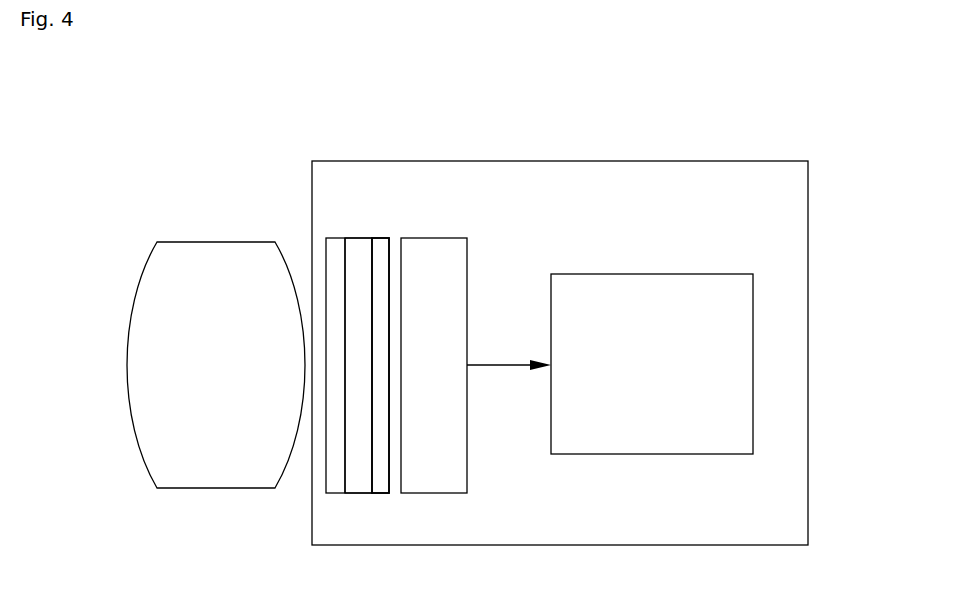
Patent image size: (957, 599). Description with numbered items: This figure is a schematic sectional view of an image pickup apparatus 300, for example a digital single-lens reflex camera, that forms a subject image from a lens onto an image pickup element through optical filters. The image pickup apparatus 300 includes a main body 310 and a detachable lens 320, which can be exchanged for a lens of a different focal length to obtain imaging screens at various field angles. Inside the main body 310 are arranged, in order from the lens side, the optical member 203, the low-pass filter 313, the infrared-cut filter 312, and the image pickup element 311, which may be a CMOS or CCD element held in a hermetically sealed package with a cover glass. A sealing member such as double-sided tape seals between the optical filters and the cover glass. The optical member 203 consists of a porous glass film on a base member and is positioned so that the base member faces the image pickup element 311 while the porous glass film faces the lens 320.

The image pickup apparatus 300 is at (360, 122).
The main body 310 is at (525, 161).
The detachable lens 320 is at (218, 253).
The optical member 203 is at (336, 247).
The low-pass filter 313 is at (359, 247).
The infrared-cut filter 312 is at (383, 247).
The image pickup element 311 is at (448, 247).